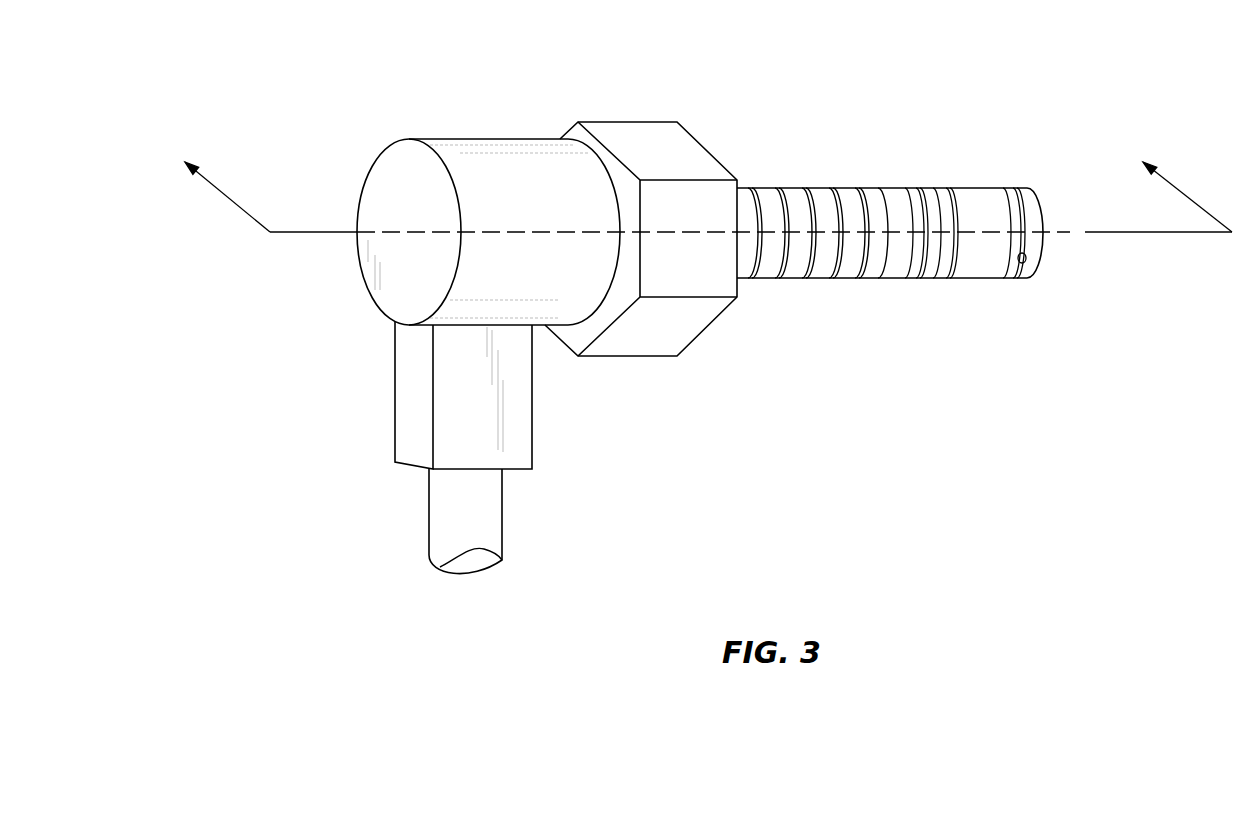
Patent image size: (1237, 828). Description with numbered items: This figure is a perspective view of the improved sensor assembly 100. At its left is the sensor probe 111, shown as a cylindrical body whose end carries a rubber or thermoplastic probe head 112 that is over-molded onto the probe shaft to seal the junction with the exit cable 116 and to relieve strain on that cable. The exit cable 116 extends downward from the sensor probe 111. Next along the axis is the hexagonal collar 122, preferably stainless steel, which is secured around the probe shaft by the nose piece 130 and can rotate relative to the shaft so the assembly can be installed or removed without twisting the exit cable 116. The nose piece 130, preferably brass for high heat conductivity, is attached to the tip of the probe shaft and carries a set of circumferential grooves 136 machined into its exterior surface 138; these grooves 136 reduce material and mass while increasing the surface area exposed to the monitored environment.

The sensor assembly 100 is at (699, 327).
The sensor probe 111 is at (478, 152).
The probe head 112 is at (385, 188).
The exit cable 116 is at (448, 537).
The collar 122 is at (697, 160).
The nose piece 130 is at (1045, 250).
The grooves 136 is at (1015, 278).
The exterior surface 138 is at (1008, 187).